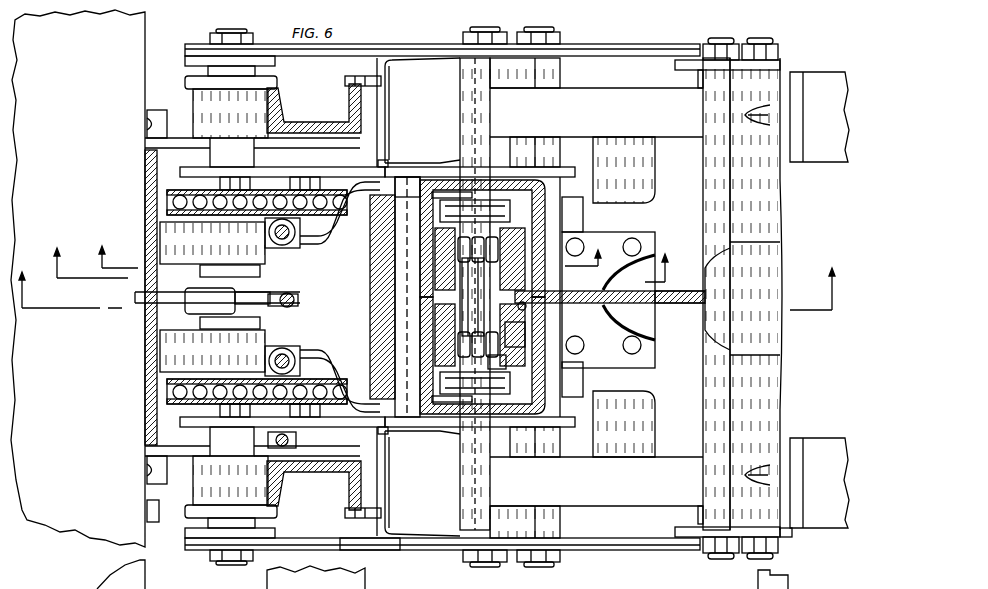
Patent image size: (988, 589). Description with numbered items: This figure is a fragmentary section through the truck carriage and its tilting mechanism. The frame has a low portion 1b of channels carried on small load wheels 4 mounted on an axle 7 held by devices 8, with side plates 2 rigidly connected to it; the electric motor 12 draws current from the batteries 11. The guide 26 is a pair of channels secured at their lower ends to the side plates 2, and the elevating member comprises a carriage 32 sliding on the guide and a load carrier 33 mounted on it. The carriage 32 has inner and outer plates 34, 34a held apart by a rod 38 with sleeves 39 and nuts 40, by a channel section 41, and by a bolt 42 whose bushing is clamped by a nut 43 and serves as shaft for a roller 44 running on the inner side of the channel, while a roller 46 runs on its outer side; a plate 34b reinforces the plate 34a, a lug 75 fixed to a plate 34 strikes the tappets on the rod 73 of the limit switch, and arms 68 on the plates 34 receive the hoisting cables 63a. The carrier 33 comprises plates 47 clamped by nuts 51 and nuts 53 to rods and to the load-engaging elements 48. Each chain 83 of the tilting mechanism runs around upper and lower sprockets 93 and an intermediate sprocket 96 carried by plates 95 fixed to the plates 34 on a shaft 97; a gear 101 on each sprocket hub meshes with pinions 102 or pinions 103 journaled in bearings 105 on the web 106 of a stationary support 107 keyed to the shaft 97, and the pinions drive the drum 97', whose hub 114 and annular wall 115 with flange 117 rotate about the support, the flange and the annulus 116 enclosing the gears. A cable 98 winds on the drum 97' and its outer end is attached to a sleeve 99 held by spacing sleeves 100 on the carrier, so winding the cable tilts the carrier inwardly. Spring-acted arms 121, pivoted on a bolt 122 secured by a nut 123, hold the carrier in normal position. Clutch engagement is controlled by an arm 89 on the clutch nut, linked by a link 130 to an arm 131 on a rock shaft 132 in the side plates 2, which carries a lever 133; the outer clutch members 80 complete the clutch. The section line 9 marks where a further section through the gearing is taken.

The electric motor 12 is at (135, 163).
The axle 7 is at (596, 381).
The devices 8 is at (360, 257).
The section line 9- 9 is at (348, 249).
The outer plates 34a is at (638, 50).
The reinforcing plate 34b is at (330, 527).
The bolt 42 is at (230, 32).
The roller 44 is at (188, 78).
The lug 75 is at (250, 460).
The side plates 2 is at (180, 135).
The rock shaft 132 is at (148, 350).
The arm 131 is at (158, 320).
The lever 133 is at (150, 520).
The guide 26 is at (272, 108).
The roller 46 is at (345, 82).
The sprockets 93 is at (340, 176).
The inner plates 34 is at (580, 168).
The nut 43 is at (175, 400).
The outer clutch members 80 is at (170, 235).
The arms 68 is at (305, 238).
The arm 89 is at (270, 290).
The link 130 is at (228, 318).
The power supply 11 is at (581, 294).
The sleeves 39 is at (562, 72).
The bolt 122 is at (478, 30).
The nut 123 is at (530, 27).
The nuts 40 is at (560, 38).
The rod 38 is at (535, 565).
The channel section 41 is at (388, 150).
The plates 95 is at (420, 170).
The shaft 97 is at (418, 155).
The hub 114 is at (412, 370).
The support 107 is at (371, 297).
The sprocket 96 is at (466, 400).
The chains 83 is at (470, 195).
The gear 101 is at (460, 222).
The annulus 116 is at (500, 228).
The bearings 105 is at (484, 336).
The web 106 is at (520, 342).
The pinions 103 is at (506, 365).
The annular wall 115 is at (526, 308).
The flange 117 is at (545, 292).
The cable 98 is at (660, 306).
The load wheels 4 is at (655, 178).
The pinions 102 is at (583, 214).
The low portion 1b is at (658, 236).
The drum 97' is at (612, 297).
The spacing sleeves 100 is at (783, 216).
The sleeve 99 is at (782, 268).
The spring-acted devices 121 is at (700, 140).
The plates 47 is at (676, 66).
The nuts 51 is at (720, 556).
The nuts 53 is at (775, 556).
The load engaging and supporting elements 48 is at (836, 74).
The load carrier 33 is at (805, 539).
The carriage 32 is at (385, 549).
The rod 73 is at (300, 440).
The cables 63a is at (316, 577).